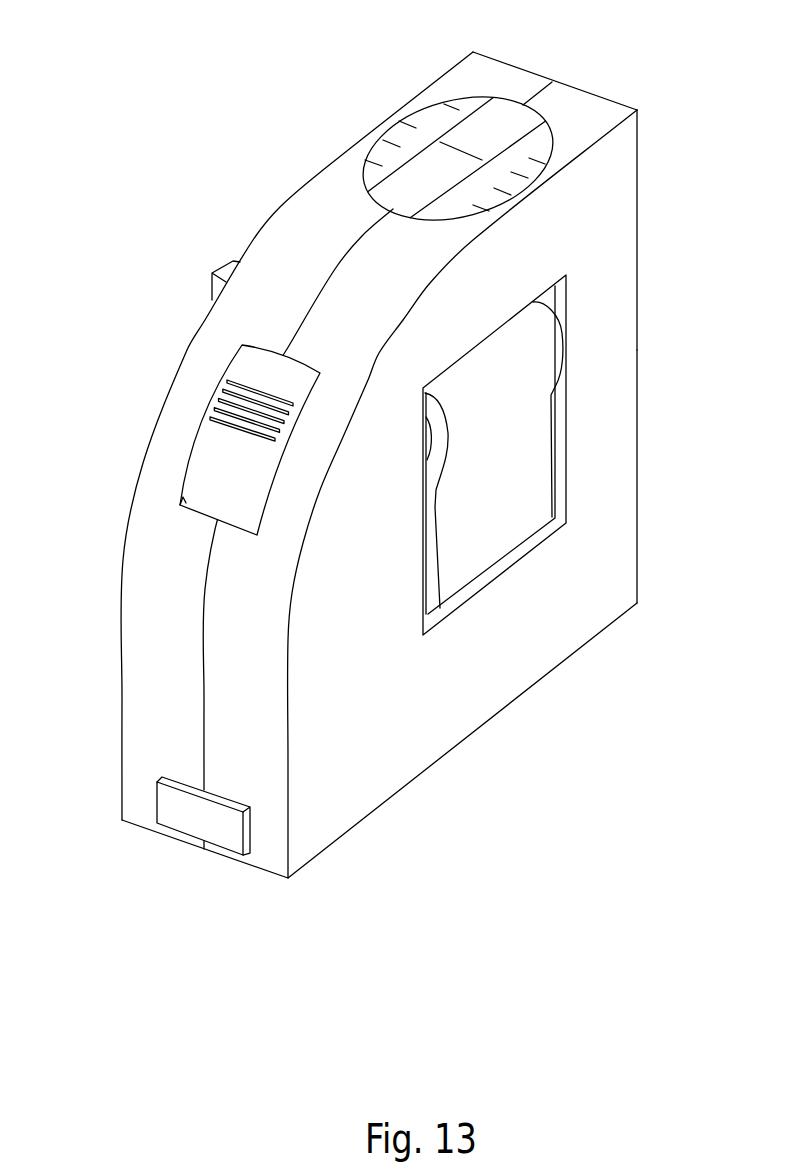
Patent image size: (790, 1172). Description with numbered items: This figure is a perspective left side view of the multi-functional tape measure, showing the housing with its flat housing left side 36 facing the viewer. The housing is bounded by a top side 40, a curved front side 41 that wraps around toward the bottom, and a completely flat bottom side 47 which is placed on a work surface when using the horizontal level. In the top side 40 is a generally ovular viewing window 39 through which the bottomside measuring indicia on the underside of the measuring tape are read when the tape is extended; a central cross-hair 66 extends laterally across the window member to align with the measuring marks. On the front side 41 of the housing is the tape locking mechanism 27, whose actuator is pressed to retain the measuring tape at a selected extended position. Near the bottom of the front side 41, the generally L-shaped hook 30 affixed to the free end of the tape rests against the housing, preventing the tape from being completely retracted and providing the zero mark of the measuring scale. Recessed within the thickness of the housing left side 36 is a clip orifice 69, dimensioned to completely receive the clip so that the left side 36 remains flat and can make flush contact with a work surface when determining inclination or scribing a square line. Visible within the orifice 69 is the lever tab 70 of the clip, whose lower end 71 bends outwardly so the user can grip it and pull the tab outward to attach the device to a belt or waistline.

The tape locking mechanism 27 is at (210, 457).
The hook 30 is at (180, 813).
The housing left side 36 is at (623, 172).
The viewing window 39 is at (370, 150).
The top side 40 is at (588, 100).
The front side 41 is at (138, 668).
The bottom side 47 is at (478, 728).
The cross-hair 66 is at (457, 147).
The clip orifice 69 is at (505, 565).
The lever tab 70 is at (523, 465).
The lower end 71 is at (588, 590).